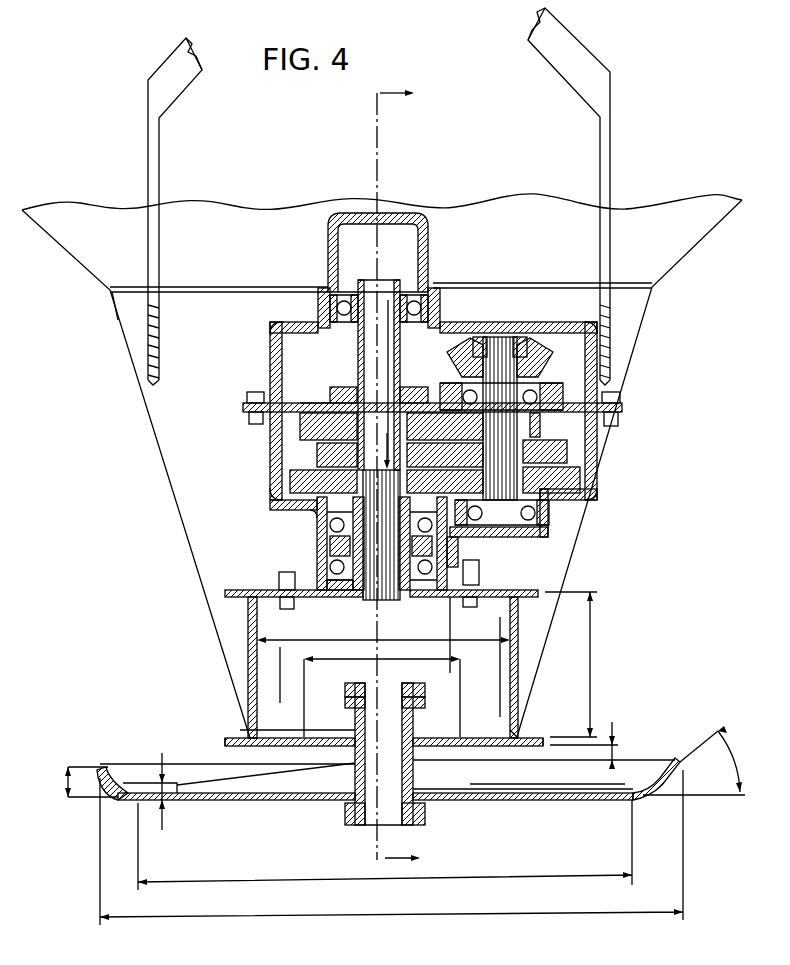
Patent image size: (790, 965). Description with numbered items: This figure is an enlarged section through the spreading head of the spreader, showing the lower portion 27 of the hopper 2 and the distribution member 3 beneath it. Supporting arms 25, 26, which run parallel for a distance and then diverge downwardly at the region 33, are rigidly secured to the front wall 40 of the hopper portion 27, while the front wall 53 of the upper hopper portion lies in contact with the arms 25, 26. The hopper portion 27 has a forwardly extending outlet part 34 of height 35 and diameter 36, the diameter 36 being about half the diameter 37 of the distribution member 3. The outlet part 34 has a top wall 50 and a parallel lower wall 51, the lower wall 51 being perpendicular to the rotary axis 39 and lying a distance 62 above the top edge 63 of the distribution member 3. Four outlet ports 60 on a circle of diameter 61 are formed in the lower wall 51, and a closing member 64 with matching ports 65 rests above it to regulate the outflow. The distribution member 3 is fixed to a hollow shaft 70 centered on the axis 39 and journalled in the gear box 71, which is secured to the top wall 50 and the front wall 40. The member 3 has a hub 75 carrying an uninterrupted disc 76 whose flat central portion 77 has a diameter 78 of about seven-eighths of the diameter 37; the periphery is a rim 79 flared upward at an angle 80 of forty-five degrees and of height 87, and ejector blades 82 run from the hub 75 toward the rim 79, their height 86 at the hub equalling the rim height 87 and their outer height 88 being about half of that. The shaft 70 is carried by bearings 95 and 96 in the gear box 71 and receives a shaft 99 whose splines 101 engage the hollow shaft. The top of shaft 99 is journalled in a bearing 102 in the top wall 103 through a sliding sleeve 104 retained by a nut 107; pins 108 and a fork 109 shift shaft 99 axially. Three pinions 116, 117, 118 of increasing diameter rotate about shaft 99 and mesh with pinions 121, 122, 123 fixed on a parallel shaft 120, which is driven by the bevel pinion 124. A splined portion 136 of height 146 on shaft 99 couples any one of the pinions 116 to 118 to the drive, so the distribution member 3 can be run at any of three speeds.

The hopper 2 is at (472, 193).
The distribution member 3 is at (388, 787).
The supporting arm 25 is at (592, 85).
The supporting arm 26 is at (165, 62).
The lower portion of the hopper 27 is at (180, 440).
The region 33 is at (185, 58).
The outlet part 34 is at (257, 657).
The height 35 is at (605, 650).
The diameter 36 is at (417, 638).
The diameter 37 is at (420, 900).
The rotary axis 39 is at (377, 165).
The front wall 40 is at (220, 313).
The top wall 50 is at (235, 598).
The lower wall 51 is at (240, 732).
The front wall 53 is at (258, 210).
The outlet ports 60 is at (314, 732).
The diameter 61 is at (358, 681).
The distance 62 is at (612, 752).
The top edge 63 is at (112, 765).
The closing member 64 is at (512, 735).
The ports 65 is at (300, 736).
The hollow shaft 70 is at (432, 675).
The gear box 71 is at (276, 451).
The hub 75 is at (437, 802).
The disc 76 is at (490, 790).
The central portion 77 is at (607, 795).
The diameter 78 is at (385, 847).
The rim 79 is at (672, 797).
The angle 80 is at (740, 760).
The ejector blades 82 is at (255, 792).
The height 86 is at (298, 786).
The height 87 is at (53, 778).
The height 88 is at (160, 768).
The bearing 95 is at (330, 562).
The bearing 96 is at (320, 525).
The shaft 99 is at (375, 456).
The splines 101 is at (352, 600).
The bearing 102 is at (330, 305).
The top wall 103 is at (328, 226).
The sliding sleeve 104 is at (348, 340).
The nut 107 is at (425, 276).
The pins 108 is at (345, 385).
The fork 109 is at (305, 405).
The pinion 116 is at (330, 490).
The pinion 117 is at (330, 477).
The pinion 118 is at (290, 437).
The shaft 120 is at (505, 536).
The pinion 121 is at (572, 482).
The pinion 122 is at (565, 450).
The pinion 123 is at (535, 424).
The bevel pinion 124 is at (530, 340).
The splined portion 136 is at (313, 506).
The height 146 is at (348, 440).